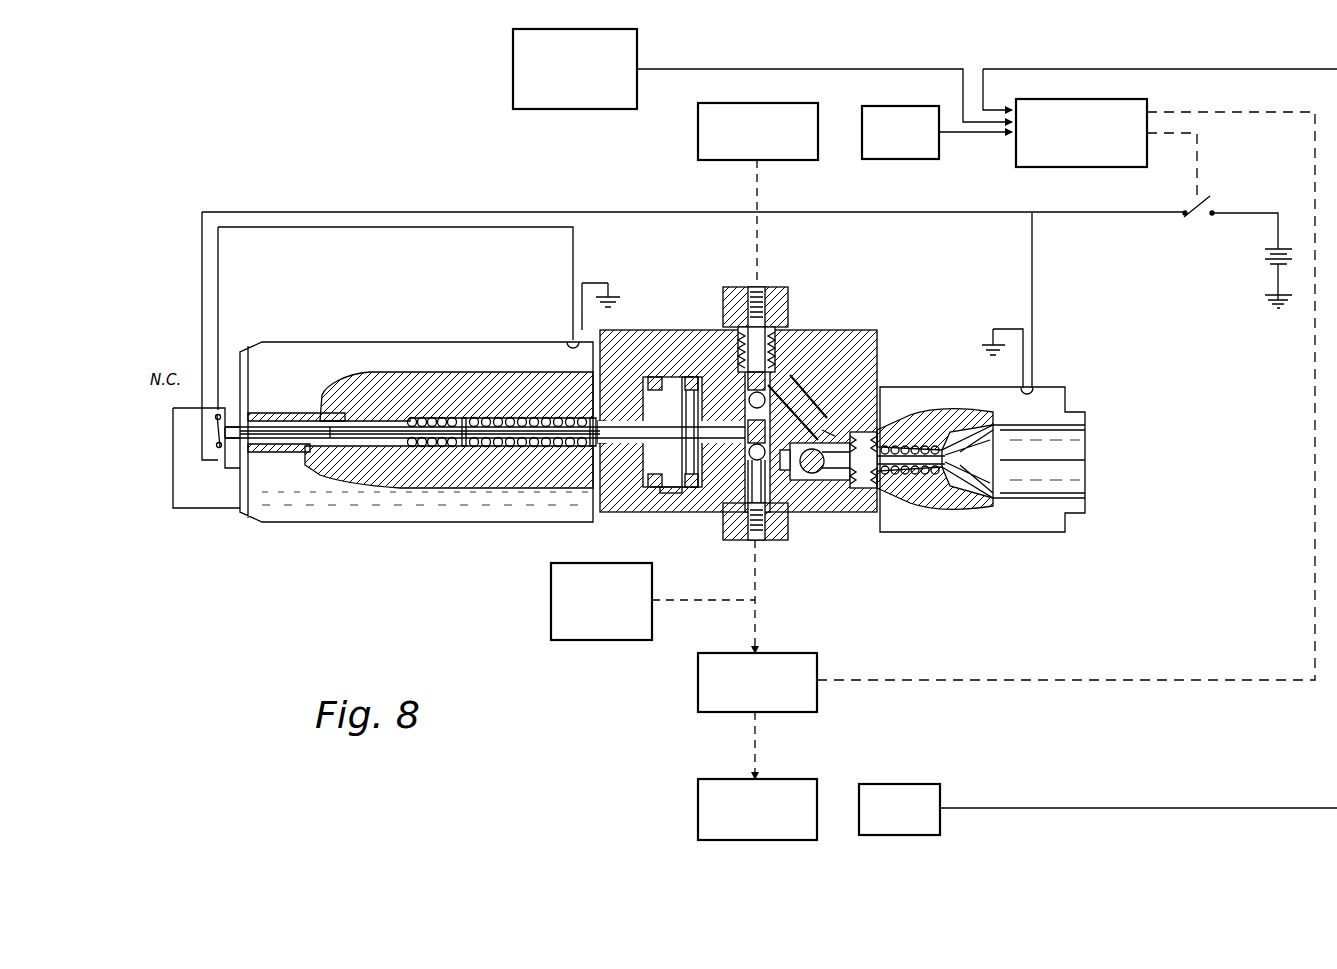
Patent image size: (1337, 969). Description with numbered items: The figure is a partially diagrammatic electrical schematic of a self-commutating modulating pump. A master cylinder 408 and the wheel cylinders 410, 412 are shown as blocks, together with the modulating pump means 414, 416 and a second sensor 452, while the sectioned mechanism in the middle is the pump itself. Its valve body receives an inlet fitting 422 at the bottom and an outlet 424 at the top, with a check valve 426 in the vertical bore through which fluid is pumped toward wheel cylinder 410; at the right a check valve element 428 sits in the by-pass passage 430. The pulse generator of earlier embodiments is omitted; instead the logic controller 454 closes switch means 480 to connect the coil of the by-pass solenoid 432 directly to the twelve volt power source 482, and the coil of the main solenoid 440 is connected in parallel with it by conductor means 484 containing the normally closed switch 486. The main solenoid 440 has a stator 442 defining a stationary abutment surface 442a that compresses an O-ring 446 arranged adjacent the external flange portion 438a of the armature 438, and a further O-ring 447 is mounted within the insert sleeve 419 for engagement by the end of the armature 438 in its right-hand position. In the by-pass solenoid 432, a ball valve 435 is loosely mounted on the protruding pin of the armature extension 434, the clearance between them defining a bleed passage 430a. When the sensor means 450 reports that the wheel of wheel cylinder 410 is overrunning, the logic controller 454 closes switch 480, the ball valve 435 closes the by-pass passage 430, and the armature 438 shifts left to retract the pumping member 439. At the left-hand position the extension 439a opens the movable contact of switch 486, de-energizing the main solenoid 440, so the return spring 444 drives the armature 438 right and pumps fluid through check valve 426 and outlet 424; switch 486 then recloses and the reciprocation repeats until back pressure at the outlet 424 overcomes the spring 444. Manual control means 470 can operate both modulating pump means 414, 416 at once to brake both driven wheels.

The master cylinder 408 is at (551, 600).
The wheel cylinder 410 is at (722, 160).
The wheel cylinder 412 is at (765, 840).
The modulating pump means 414 is at (505, 274).
The modulating pump means 416 is at (698, 684).
The insert sleeve 419 is at (708, 478).
The inlet fitting 422 is at (767, 543).
The outlet 424 is at (776, 286).
The check valve 426 is at (768, 388).
The check valve 428 is at (793, 479).
The by-pass passage 430 is at (807, 392).
The bleed passage 430a is at (832, 488).
The by-pass solenoid 432 is at (1062, 402).
The armature extension 434 is at (915, 462).
The ball valve 435 is at (826, 438).
The armature 438 is at (504, 458).
The external flange portion 438a is at (673, 503).
The pumping member 439 is at (626, 438).
The extension 439a is at (330, 430).
The main solenoid 440 is at (304, 336).
The stator 442 is at (358, 368).
The stationary abutment surface 442a is at (645, 497).
The return spring 444 is at (428, 466).
The O-ring 446 is at (658, 377).
The O-ring 447 is at (695, 377).
The sensor means 450 is at (902, 159).
The sensor 452 is at (910, 835).
The logic controller 454 is at (1070, 167).
The manual control means 470 is at (548, 110).
The switch means 480 is at (1190, 226).
The power source 482 is at (1263, 264).
The conductor means 484 is at (314, 208).
The normally closed switch 486 is at (215, 432).